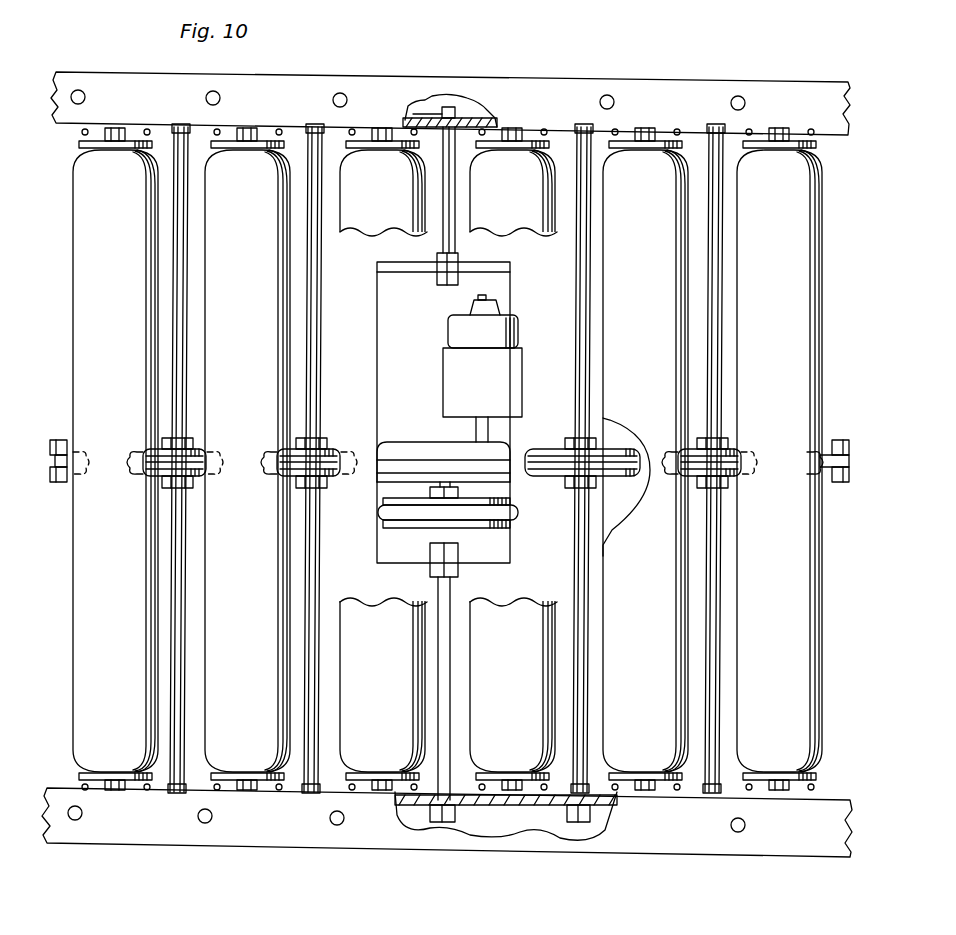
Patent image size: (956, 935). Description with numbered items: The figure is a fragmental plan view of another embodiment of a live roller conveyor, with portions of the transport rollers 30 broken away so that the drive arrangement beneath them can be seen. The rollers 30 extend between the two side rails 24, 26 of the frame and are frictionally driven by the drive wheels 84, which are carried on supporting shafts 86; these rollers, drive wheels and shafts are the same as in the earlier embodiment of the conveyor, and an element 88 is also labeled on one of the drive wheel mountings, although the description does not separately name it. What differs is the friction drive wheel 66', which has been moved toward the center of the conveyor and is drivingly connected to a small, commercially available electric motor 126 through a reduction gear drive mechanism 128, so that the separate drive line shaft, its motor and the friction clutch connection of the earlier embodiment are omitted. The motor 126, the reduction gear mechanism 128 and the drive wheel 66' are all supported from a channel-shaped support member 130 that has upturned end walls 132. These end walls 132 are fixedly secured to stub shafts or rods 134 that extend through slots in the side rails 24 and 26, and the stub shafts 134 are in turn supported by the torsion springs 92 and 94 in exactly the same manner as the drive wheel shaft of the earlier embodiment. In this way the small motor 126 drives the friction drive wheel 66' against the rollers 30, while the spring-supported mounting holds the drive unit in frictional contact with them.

The side rail 24 is at (680, 825).
The side rail 26 is at (675, 90).
The roller 30 is at (800, 700).
The friction drive wheel 66' is at (465, 533).
The drive wheel 84 is at (615, 455).
The supporting shaft 86 is at (178, 346).
The pulley hub 88 is at (622, 473).
The torsion spring 92 is at (565, 833).
The torsion spring 94 is at (433, 117).
The small electric motor 126 is at (515, 362).
The reduction gear drive mechanism 128 is at (413, 448).
The channel-shaped support member 130 is at (388, 330).
The upturned end wall 132 is at (497, 267).
The stub shaft 134 is at (453, 158).